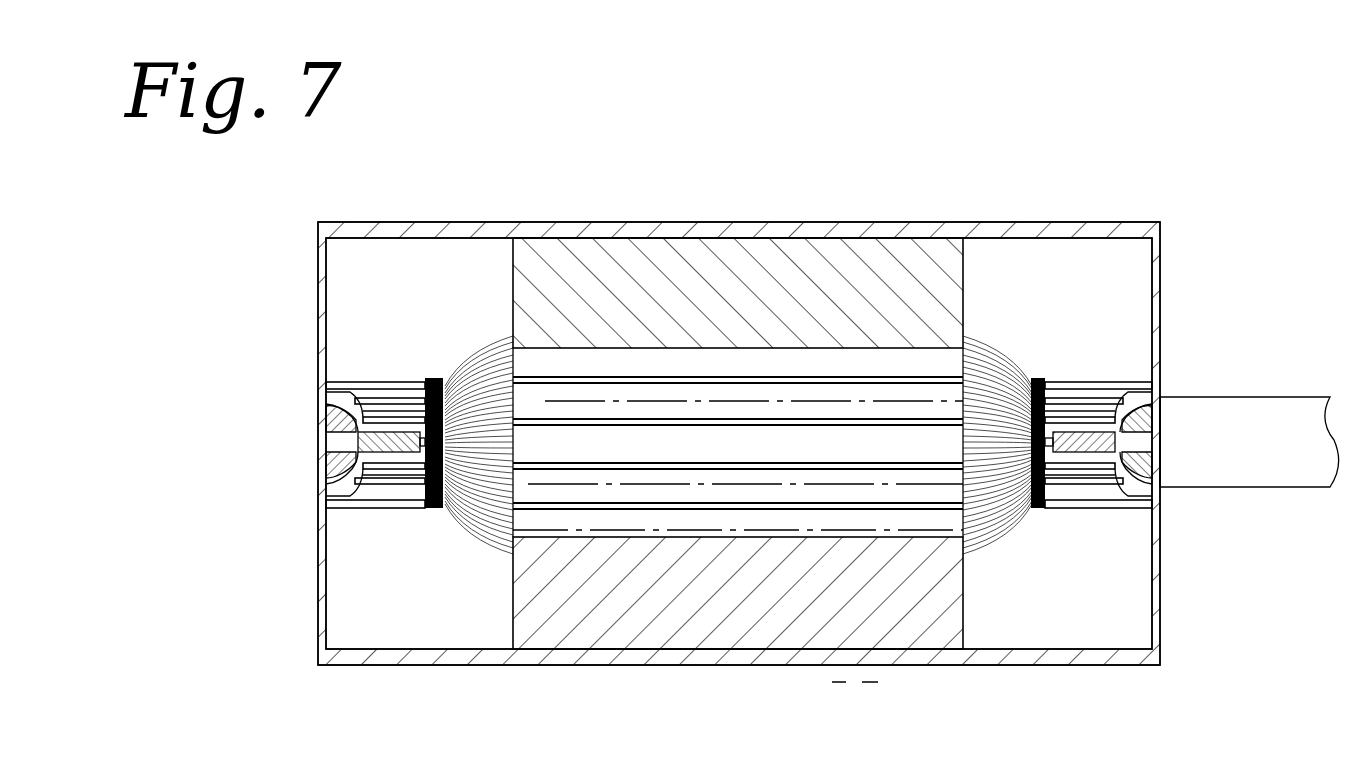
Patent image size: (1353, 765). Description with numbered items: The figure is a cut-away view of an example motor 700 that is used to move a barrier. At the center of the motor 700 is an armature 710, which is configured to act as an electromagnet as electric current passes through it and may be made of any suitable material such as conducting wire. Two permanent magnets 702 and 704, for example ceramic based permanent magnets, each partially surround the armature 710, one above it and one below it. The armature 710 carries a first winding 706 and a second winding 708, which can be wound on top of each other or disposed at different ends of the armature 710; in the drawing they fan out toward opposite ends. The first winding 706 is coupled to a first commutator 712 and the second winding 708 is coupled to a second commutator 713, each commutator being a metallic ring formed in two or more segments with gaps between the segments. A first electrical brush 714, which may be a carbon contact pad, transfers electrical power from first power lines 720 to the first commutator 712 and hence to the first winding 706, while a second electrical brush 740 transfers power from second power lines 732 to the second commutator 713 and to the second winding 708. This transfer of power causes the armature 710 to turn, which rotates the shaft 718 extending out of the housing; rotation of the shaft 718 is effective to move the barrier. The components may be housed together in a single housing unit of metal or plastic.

The motor 700 is at (823, 191).
The magnet 702 is at (940, 250).
The magnet 704 is at (935, 631).
The first winding 706 is at (500, 356).
The second winding 708 is at (985, 368).
The armature 710 is at (506, 540).
The first commutator 712 is at (324, 476).
The second commutator 713 is at (1150, 490).
The first electrical brush 714 is at (328, 418).
The rotating shaft 718 is at (1250, 396).
The first power lines 720 is at (328, 456).
The second power lines 732 is at (1158, 460).
The second electrical brush 740 is at (1157, 420).